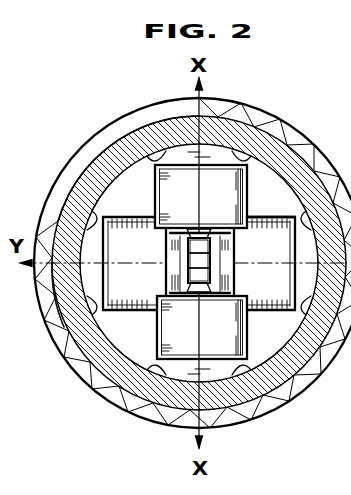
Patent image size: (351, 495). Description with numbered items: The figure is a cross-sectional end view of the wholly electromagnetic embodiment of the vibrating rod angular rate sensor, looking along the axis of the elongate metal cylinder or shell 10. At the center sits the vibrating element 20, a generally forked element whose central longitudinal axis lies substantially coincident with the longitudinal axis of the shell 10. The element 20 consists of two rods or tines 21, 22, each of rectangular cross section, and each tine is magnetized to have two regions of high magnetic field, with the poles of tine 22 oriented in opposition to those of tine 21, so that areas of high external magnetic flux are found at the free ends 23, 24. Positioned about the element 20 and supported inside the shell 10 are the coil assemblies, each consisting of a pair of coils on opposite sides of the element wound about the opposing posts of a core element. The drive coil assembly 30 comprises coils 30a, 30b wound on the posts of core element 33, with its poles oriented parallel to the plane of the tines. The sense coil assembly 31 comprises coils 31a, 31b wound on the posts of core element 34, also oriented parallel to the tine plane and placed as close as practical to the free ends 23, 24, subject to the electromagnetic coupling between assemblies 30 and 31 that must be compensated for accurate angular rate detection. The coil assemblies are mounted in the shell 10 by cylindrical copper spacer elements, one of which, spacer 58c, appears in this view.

The shell 10 is at (241, 104).
The vibrating element 20 is at (222, 255).
The tine 21 is at (204, 252).
The tine 22 is at (200, 281).
The free end 23 is at (193, 237).
The free end 24 is at (199, 284).
The coil assembly 30 is at (158, 335).
The coil 30a is at (248, 165).
The coil 30b is at (277, 387).
The coil assembly 31 is at (274, 306).
The coil 31a is at (267, 227).
The coil 31b is at (126, 222).
The core element 33 is at (137, 150).
The core element 34 is at (83, 330).
The cylindrical copper spacer element 58c is at (148, 396).